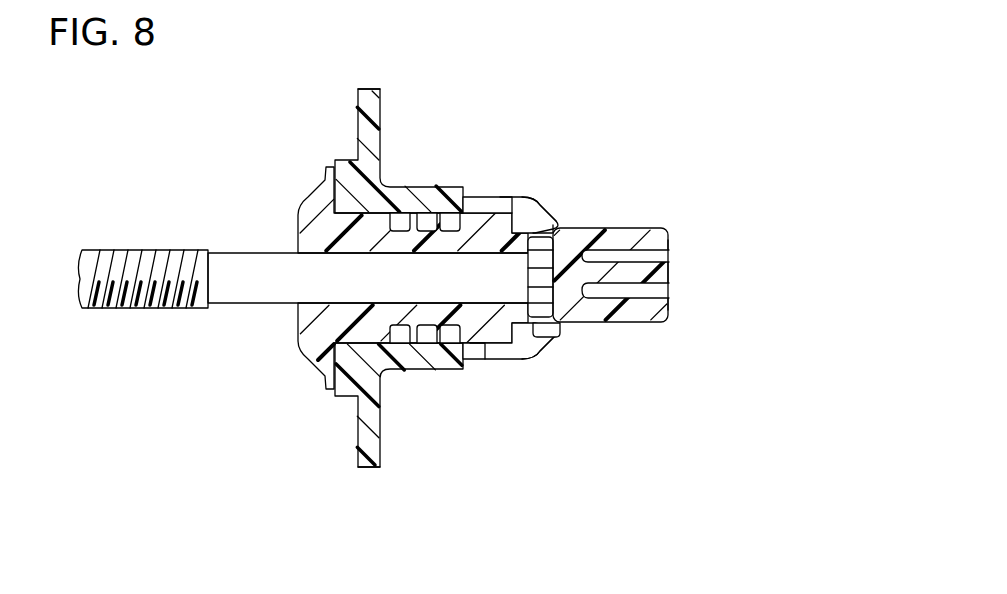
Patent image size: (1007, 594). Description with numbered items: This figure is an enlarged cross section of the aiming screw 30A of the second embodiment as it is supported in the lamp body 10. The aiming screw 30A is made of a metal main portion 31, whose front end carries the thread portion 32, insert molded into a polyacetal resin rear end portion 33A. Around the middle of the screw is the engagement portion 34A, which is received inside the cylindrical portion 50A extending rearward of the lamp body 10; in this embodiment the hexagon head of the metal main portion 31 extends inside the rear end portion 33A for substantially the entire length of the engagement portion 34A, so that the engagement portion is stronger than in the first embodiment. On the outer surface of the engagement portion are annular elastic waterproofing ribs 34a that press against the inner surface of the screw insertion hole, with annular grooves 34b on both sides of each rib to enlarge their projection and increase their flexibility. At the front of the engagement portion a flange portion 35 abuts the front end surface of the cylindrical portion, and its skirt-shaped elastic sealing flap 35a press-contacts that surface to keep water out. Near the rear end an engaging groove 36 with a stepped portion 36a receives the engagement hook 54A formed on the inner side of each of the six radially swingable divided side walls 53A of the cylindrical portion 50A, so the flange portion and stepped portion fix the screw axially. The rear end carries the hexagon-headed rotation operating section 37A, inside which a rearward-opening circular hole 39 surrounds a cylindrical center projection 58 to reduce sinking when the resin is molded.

The lamp body 10 is at (358, 118).
The aiming screw 30A is at (314, 285).
The metal main portion 31 is at (243, 303).
The thread portion 32 is at (115, 308).
The rear end portion 33A is at (696, 255).
The engagement portion 34A is at (470, 369).
The waterproofing ribs 34a is at (412, 213).
The annular grooves 34b is at (443, 343).
The flange portion 35 is at (298, 215).
The elastic sealing flap 35a is at (330, 390).
The engaging groove 36 is at (517, 197).
The stepped portion 36a is at (545, 198).
The rotation operating section 37A is at (660, 322).
The circular hole 39 is at (662, 257).
The cylindrical portion 50A is at (534, 340).
The divided side walls 53A is at (505, 197).
The engagement hook 54A is at (545, 228).
The cylindrical center projection 58 is at (672, 276).